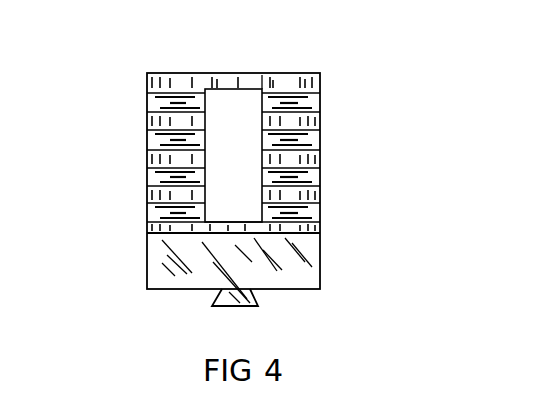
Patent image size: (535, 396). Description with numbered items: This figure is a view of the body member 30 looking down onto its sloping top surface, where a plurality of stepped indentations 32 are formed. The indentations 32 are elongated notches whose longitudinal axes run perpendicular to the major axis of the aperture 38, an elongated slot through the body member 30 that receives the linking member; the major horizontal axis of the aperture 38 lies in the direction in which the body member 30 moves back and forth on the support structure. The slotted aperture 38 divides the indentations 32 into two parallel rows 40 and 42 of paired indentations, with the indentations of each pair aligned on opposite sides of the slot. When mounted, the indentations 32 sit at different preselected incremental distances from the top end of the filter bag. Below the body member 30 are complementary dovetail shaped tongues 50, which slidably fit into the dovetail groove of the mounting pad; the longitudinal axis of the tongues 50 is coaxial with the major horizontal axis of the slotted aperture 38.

The body member 30 is at (135, 122).
The stepped indentations 32 is at (157, 173).
The aperture 38 is at (233, 155).
The row of paired indentations 40 is at (178, 72).
The row of paired indentations 42 is at (312, 72).
The dovetail shaped tongues 50 is at (255, 303).